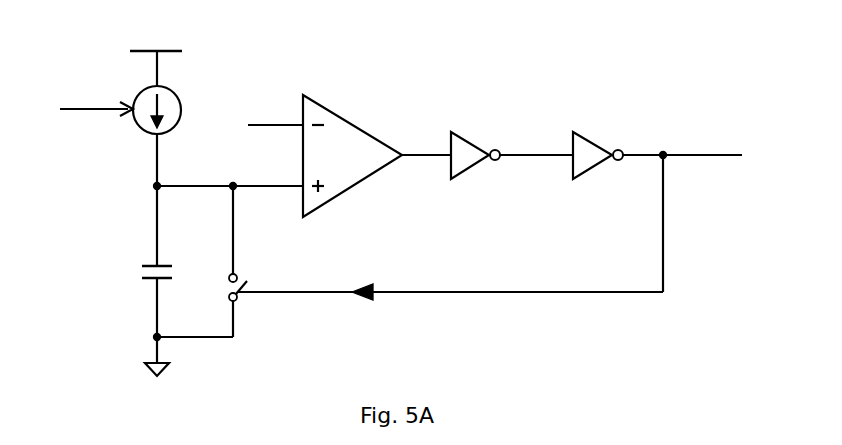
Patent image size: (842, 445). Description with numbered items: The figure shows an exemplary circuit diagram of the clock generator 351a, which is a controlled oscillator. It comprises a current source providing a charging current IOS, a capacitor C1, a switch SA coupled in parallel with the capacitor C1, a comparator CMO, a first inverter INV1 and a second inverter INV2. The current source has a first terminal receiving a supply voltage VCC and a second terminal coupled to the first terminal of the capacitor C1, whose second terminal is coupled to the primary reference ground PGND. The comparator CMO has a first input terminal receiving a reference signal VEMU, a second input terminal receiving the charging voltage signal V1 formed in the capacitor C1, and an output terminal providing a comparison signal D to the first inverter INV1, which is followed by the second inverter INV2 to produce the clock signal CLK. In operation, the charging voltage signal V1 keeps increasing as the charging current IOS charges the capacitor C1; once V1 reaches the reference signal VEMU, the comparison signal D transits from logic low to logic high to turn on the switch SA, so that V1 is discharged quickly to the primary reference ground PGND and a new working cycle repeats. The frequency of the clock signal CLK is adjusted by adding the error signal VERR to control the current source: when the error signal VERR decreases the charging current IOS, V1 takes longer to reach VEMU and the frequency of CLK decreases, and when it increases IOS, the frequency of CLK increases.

The clock generator 351a is at (730, 44).
The comparator CMO is at (355, 185).
The first inverter INV1 is at (463, 172).
The second inverter INV2 is at (586, 176).
The capacitor C1 is at (143, 261).
The switch SA is at (290, 298).
The charging current IOS is at (173, 136).
The supply voltage VCC is at (156, 54).
The error signal VERR is at (96, 96).
The reference signal VEMU is at (272, 110).
The charging voltage signal V1 is at (204, 285).
The comparison signal D is at (425, 142).
The clock signal CLK is at (554, 226).
The primary reference ground PGND is at (193, 357).